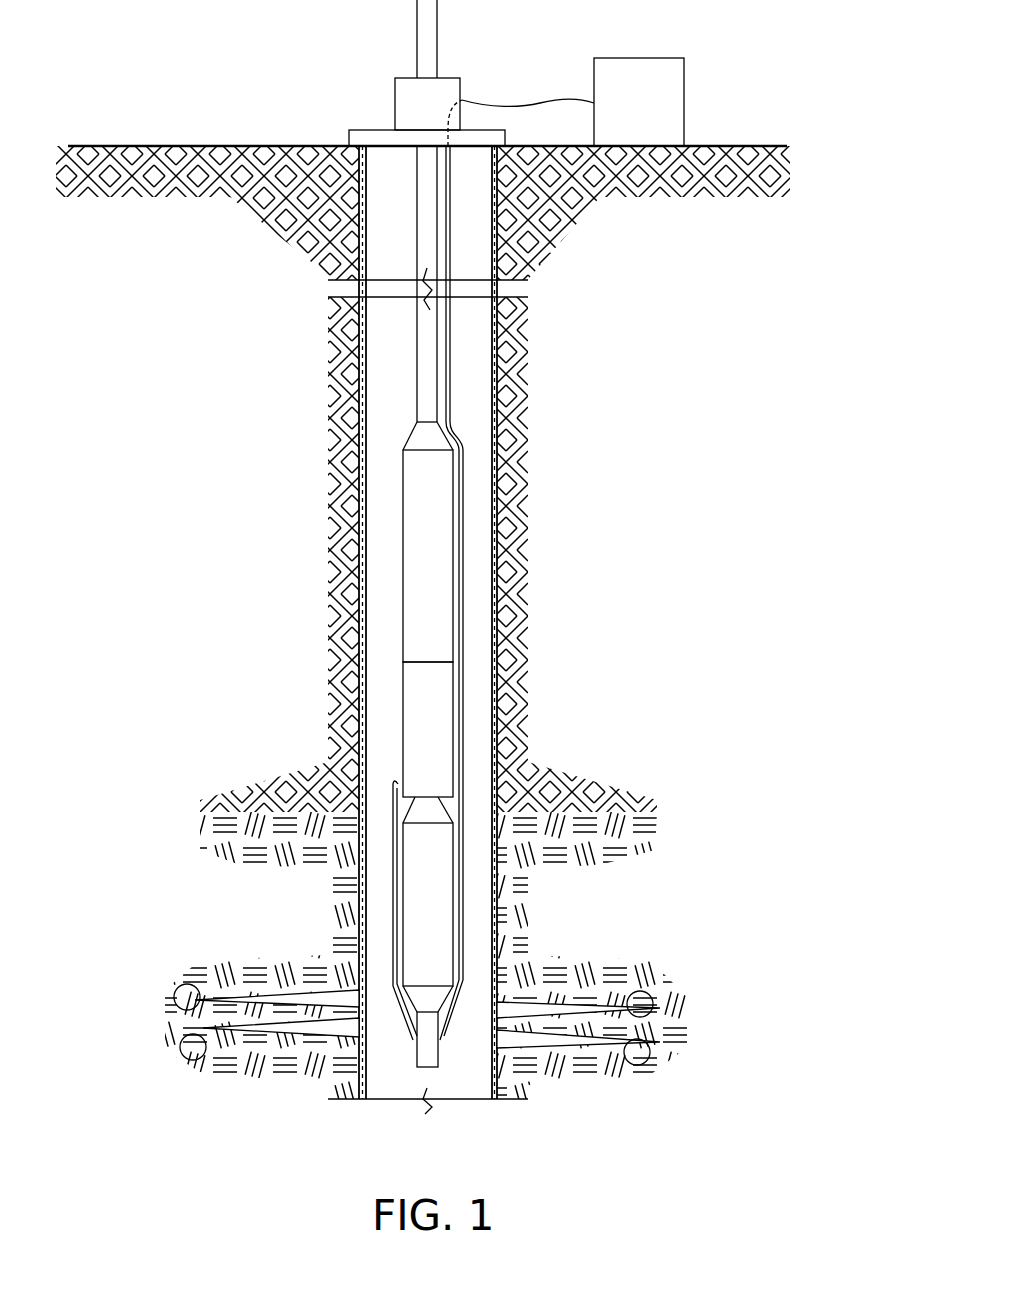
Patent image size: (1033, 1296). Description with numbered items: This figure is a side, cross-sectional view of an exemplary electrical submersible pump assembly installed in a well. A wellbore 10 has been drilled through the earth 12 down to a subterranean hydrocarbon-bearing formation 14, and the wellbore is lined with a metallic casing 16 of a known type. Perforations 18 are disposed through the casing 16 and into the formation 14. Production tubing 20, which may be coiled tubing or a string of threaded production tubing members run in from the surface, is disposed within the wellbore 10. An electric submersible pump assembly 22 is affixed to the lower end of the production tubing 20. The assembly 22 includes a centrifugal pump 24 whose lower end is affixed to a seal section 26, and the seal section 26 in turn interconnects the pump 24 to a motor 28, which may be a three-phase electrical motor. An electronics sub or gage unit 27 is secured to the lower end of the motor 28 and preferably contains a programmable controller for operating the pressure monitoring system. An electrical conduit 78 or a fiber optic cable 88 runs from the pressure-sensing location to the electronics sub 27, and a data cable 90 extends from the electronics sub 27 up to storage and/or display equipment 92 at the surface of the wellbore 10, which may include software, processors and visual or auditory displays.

The wellbore 10 is at (522, 442).
The earth 12 is at (329, 207).
The subterranean hydrocarbon-bearing formation 14 is at (549, 980).
The metallic casing 16 is at (360, 644).
The perforations 18 is at (177, 983).
The production tubing 20 is at (416, 352).
The electric submersible pump assembly 22 is at (385, 713).
The centrifugal pump 24 is at (413, 515).
The seal section 26 is at (443, 737).
The electronics sub or gage unit 27 is at (417, 1043).
The motor 28 is at (453, 903).
The electrical conduit 78 is at (392, 921).
The fiber optic cable 88 is at (303, 910).
The data cable 90 is at (463, 613).
The storage and/or display equipment 92 is at (668, 58).